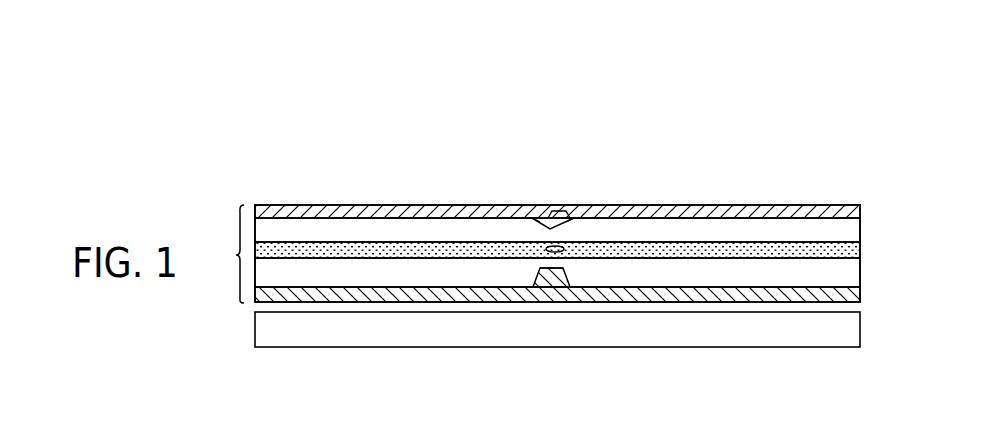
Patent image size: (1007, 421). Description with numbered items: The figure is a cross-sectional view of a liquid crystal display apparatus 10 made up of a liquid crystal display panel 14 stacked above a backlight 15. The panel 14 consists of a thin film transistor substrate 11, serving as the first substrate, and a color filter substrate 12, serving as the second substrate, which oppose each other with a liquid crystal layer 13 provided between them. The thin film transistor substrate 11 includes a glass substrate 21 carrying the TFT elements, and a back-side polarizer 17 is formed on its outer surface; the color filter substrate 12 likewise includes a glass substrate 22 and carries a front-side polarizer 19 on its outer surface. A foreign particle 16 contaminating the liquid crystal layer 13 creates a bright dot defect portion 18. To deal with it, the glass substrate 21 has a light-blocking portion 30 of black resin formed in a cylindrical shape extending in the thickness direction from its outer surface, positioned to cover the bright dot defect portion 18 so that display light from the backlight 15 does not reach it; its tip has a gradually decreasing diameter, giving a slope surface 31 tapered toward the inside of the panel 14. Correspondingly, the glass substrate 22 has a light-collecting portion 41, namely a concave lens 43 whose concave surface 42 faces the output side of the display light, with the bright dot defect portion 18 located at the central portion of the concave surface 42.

The liquid crystal display apparatus 10 is at (569, 86).
The thin film transistor substrate 11 is at (856, 277).
The color filter substrate 12 is at (860, 229).
The liquid crystal layer 13 is at (860, 253).
The liquid crystal display panel 14 is at (529, 254).
The backlight 15 is at (857, 325).
The foreign particle 16 is at (562, 250).
The back-side polarizer 17 is at (345, 300).
The bright dot defect portion 18 is at (546, 244).
The front-side polarizer 19 is at (343, 210).
The glass substrate 21 is at (281, 290).
The glass substrate 22 is at (285, 230).
The light-blocking portion 30 is at (553, 288).
The slope surface 31 is at (531, 268).
The light-collecting portion 41 is at (560, 218).
The concave surface 42 is at (543, 215).
The concave lens 43 is at (550, 222).